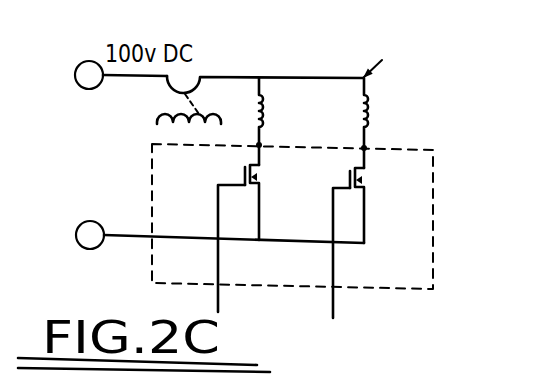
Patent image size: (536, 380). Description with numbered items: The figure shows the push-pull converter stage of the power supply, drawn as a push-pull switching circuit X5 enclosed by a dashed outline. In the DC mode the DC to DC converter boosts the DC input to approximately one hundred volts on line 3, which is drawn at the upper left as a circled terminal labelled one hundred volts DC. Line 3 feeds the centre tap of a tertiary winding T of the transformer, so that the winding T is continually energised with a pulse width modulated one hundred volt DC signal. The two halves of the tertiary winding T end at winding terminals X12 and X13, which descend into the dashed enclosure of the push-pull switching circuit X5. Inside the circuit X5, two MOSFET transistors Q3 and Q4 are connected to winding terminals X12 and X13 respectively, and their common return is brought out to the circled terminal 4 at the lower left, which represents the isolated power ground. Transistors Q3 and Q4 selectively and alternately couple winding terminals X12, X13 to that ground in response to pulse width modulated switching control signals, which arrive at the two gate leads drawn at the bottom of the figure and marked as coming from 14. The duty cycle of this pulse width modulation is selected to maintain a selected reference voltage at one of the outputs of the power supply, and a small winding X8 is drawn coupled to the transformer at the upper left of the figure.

The line 3 is at (121, 75).
The terminal 4 (return) 4 is at (220, 235).
The tertiary winding T is at (379, 61).
The transformer primary winding X8 is at (194, 107).
The winding terminal X12 is at (283, 121).
The winding terminal X13 is at (388, 123).
The push-pull switching circuit X5 is at (436, 199).
The transistor Q3 is at (283, 196).
The transistor Q4 is at (388, 199).
The gate drive inputs from controller 14 is at (284, 262).